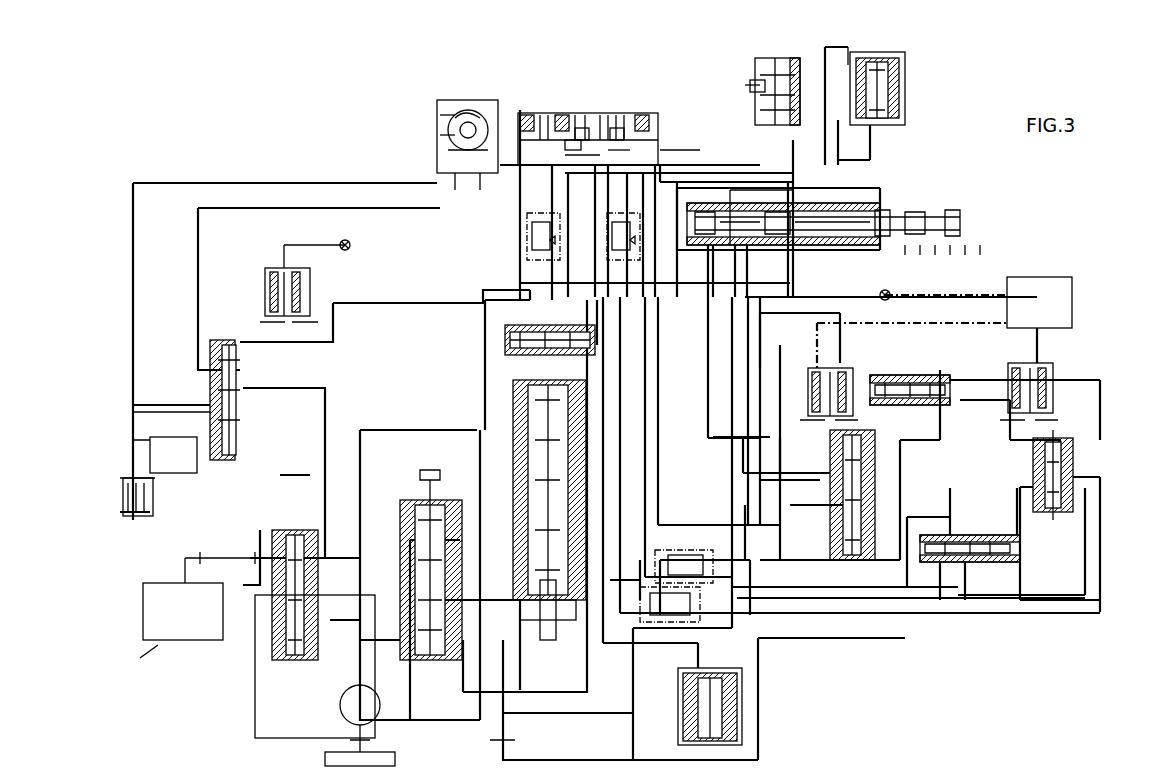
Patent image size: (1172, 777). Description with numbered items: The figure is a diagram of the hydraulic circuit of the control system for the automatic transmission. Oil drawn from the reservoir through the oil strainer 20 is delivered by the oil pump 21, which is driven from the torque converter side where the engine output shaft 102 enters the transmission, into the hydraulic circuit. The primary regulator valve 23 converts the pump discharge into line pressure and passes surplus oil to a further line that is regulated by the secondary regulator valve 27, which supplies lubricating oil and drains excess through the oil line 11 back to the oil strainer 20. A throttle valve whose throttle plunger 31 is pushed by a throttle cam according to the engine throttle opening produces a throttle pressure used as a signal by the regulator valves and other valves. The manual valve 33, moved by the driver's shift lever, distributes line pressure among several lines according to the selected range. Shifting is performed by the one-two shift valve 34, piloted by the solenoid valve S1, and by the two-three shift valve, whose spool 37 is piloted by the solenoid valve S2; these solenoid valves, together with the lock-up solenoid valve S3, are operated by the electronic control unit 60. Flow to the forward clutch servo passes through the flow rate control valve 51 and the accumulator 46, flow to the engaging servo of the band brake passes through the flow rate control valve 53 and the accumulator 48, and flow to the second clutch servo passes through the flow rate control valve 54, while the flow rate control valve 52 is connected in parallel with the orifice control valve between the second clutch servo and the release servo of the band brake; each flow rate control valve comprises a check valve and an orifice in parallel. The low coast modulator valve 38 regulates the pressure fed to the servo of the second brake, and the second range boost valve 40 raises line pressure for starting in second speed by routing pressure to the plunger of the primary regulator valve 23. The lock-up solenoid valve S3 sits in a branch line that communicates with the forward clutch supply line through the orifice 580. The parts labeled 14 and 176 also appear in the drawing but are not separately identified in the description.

The engine output shaft 102 is at (420, 160).
The transmission gear mechanism 14 is at (548, 110).
The manual valve 33 is at (878, 200).
The B-1 accumulator 48 is at (884, 128).
The electronic control unit 60 is at (1074, 284).
The primary regulator valve 23 is at (438, 665).
The secondary regulator valve 27 is at (286, 665).
The throttle plunger 31 is at (549, 490).
The 1-2 shift valve 34 is at (830, 545).
The spool 37 is at (1075, 458).
The low coast modulator valve 38 is at (1020, 565).
The second range boost valve 40 is at (930, 410).
The C-1 accumulator 46 is at (745, 720).
The flow rate control valve 51 is at (527, 240).
The flow rate control valve 52 is at (608, 234).
The flow rate control valve 53 is at (683, 556).
The flow rate control valve 54 is at (700, 598).
The orifice 580 is at (300, 345).
The servo 176 is at (772, 58).
The oil pump 21 is at (340, 718).
The oil strainer 20 is at (325, 758).
The oil line 11 is at (255, 695).
The 1-2 shift valve controlling solenoid valve S1 is at (800, 370).
The 2-3 shift valve controlling solenoid valve S2 is at (1058, 395).
The lock-up relay valve controlling solenoid valve S3 is at (312, 300).